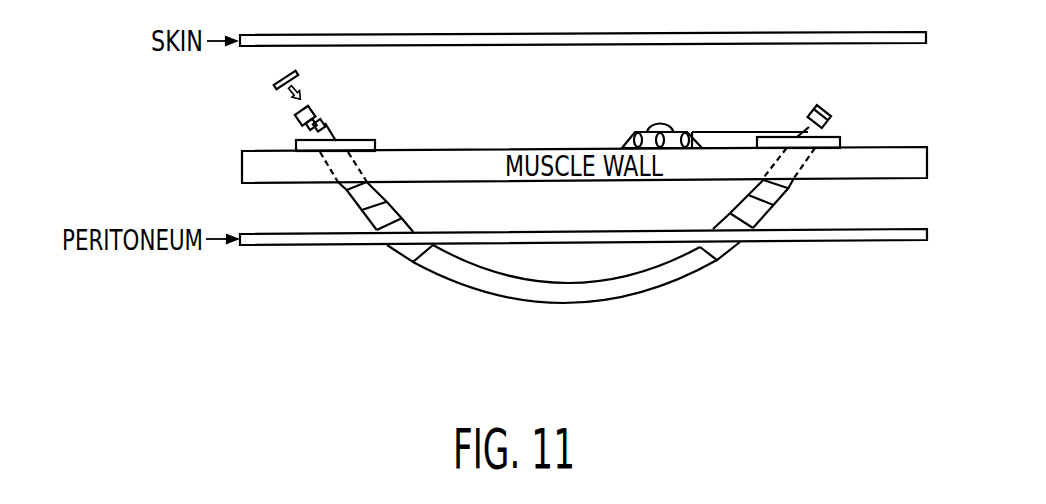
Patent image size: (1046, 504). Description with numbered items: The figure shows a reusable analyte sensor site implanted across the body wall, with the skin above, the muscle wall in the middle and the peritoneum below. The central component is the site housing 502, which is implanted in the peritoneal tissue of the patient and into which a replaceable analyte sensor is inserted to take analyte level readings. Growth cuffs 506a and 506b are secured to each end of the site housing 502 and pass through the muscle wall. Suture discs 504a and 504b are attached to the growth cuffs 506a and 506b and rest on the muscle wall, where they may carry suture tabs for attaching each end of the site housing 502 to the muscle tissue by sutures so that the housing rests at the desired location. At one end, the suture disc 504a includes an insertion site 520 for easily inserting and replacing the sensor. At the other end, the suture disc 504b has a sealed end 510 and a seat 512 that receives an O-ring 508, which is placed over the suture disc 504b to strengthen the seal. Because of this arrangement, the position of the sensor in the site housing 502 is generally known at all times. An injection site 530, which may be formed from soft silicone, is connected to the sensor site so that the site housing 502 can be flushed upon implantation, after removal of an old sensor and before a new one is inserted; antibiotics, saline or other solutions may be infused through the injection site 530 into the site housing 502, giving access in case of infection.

The site housing 502 is at (578, 297).
The suture disc 504a is at (848, 142).
The suture disc 504b is at (296, 146).
The growth cuff 506a is at (740, 244).
The growth cuff 506b is at (402, 248).
The O-ring 508 is at (270, 85).
The sealed end 510 is at (321, 100).
The seat 512 is at (333, 119).
The insertion site 520 is at (831, 103).
The injection site 530 is at (659, 116).